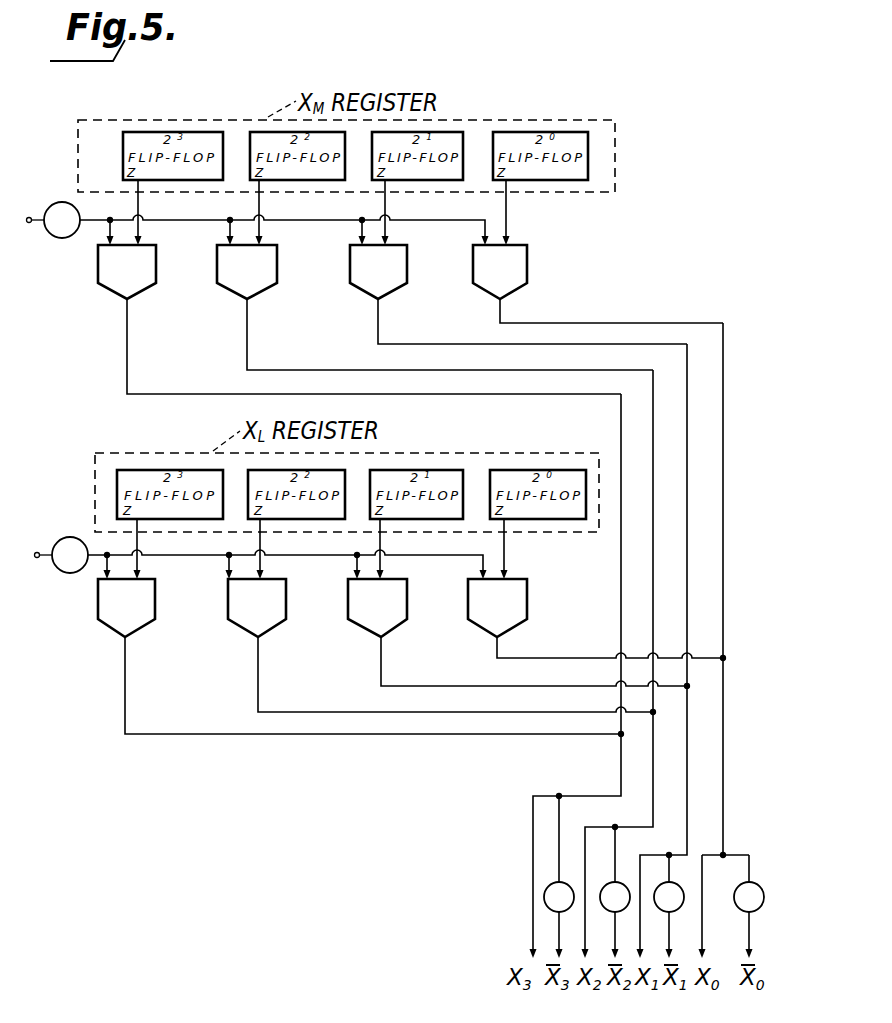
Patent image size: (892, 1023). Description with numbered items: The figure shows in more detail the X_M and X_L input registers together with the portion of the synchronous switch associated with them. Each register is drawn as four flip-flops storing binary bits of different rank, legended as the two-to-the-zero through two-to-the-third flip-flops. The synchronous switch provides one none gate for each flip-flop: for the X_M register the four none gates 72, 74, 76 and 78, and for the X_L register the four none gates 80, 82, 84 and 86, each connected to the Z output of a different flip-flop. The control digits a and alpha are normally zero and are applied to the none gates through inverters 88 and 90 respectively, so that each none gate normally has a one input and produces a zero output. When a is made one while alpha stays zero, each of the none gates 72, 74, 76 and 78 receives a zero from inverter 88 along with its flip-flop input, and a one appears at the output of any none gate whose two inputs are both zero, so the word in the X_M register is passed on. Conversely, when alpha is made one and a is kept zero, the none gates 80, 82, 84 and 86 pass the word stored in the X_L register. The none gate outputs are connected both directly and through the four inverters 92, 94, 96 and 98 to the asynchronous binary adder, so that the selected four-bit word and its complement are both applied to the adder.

The none gate 72 is at (157, 262).
The none gate 74 is at (290, 248).
The none gate 76 is at (417, 250).
The none gate 78 is at (528, 264).
The none gate 80 is at (157, 607).
The none gate 82 is at (287, 607).
The none gate 84 is at (408, 610).
The none gate 86 is at (527, 603).
The inverter 88 is at (60, 238).
The inverter 90 is at (71, 536).
The inverter 92 is at (575, 877).
The inverter 94 is at (618, 878).
The inverter 96 is at (684, 893).
The inverter 98 is at (763, 893).